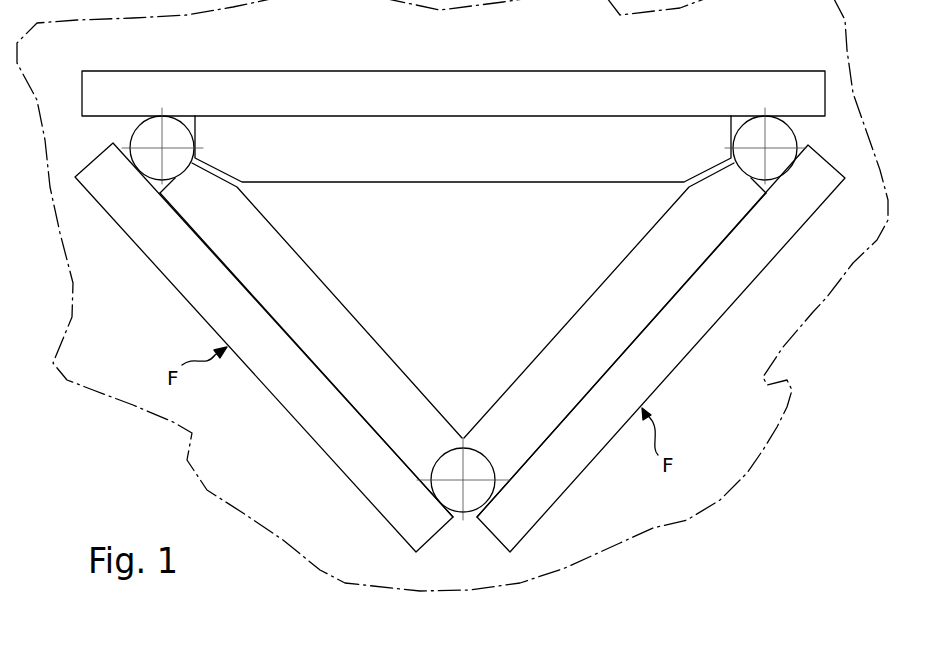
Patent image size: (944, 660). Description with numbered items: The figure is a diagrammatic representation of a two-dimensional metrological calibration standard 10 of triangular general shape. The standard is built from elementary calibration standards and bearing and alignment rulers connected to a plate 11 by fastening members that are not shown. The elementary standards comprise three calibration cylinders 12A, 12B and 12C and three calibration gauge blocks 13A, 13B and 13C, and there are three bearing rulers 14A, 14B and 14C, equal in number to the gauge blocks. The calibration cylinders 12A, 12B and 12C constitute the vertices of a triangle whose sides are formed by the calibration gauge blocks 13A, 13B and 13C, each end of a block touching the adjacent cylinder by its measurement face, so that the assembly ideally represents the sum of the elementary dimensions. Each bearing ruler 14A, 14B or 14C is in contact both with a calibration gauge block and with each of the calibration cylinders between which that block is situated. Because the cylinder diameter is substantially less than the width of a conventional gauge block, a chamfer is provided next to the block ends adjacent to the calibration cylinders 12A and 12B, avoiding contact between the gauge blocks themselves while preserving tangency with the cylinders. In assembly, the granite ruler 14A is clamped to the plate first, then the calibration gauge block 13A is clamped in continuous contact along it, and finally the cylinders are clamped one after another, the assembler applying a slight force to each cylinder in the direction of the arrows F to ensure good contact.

The two-dimensional metrological calibration standard 10 is at (460, 312).
The plate 11 is at (72, 382).
The calibration cylinder 12A is at (177, 133).
The calibration cylinder 12B is at (748, 133).
The calibration cylinder 12C is at (477, 467).
The calibration gauge block 13A is at (472, 162).
The calibration gauge block 13B is at (585, 325).
The calibration gauge block 13C is at (353, 340).
The bearing ruler 14A is at (373, 90).
The bearing ruler 14B is at (665, 352).
The bearing ruler 14C is at (318, 442).